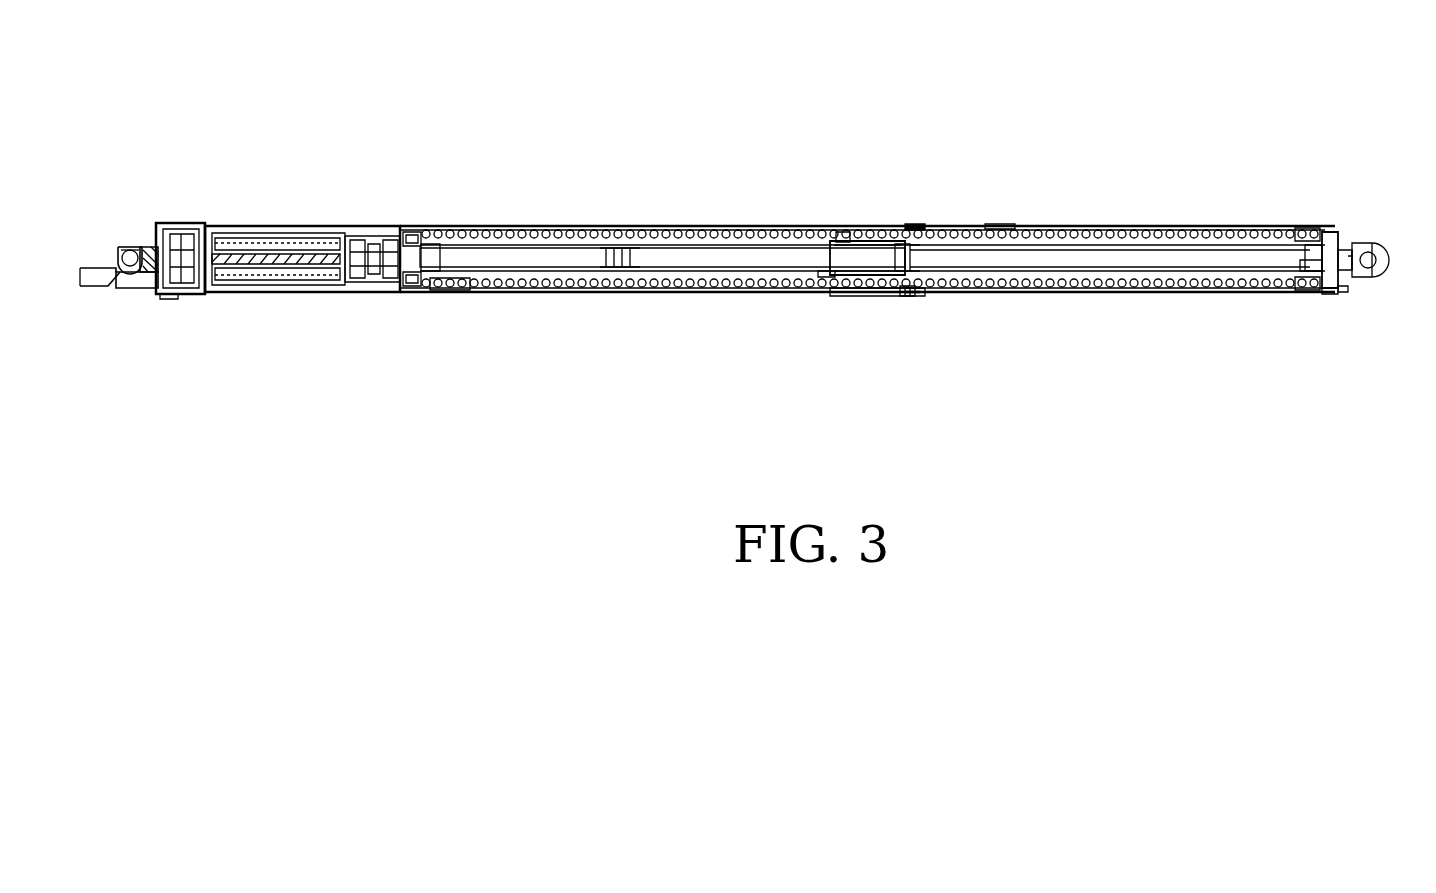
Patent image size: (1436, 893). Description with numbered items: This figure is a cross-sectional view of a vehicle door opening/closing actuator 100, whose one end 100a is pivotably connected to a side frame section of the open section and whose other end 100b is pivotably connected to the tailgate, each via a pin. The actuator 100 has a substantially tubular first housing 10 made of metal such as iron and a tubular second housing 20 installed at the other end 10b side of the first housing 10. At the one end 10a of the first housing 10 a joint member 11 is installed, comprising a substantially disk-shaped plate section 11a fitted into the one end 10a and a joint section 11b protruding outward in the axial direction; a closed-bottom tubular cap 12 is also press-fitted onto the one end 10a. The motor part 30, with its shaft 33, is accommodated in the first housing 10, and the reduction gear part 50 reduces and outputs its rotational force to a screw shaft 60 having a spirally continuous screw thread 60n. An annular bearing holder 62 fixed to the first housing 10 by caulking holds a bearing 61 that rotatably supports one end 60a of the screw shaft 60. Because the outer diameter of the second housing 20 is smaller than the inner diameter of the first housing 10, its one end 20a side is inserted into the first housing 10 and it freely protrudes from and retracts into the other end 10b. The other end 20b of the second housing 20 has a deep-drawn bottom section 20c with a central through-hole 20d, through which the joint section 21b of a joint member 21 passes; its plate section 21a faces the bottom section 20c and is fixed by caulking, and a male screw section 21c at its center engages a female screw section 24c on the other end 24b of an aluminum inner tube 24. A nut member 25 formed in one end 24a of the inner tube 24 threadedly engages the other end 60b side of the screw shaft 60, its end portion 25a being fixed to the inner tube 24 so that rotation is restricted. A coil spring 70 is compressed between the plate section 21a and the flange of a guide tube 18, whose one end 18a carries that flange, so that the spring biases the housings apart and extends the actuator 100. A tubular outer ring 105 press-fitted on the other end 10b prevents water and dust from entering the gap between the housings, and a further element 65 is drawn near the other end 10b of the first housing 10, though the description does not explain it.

The actuator 100 is at (887, 133).
The one end 100a is at (1388, 278).
The other end 100b is at (110, 287).
The first housing 10 is at (556, 220).
The one end 10a is at (170, 300).
The other end 10b is at (914, 298).
The joint member 11 is at (133, 244).
The plate section 11a is at (157, 290).
The joint section 11b is at (112, 246).
The cap 12 is at (178, 222).
The guide tube 18 is at (662, 230).
The one end 18a is at (445, 294).
The second housing 20 is at (1103, 220).
The one end 20a is at (840, 296).
The other end 20b is at (1325, 296).
The bottom section 20c is at (1340, 231).
The through-hole 20d is at (1345, 293).
The joint member 21 is at (1361, 226).
The plate section 21a is at (1328, 244).
The joint section 21b is at (1398, 235).
The male screw section 21c is at (1302, 283).
The inner tube 24 is at (1153, 230).
The one end 24a is at (842, 231).
The other end 24b is at (1310, 294).
The female screw section 24c is at (1290, 232).
The nut member 25 is at (868, 240).
The end portion 25a is at (826, 278).
The motor part 30 is at (290, 220).
The shaft 33 is at (313, 266).
The reduction gear part 50 is at (377, 220).
The screw shaft 60 is at (750, 247).
The one end 60a is at (452, 243).
The other end 60b is at (897, 243).
The screw thread 60n is at (621, 247).
The bearing 61 is at (410, 289).
The bearing holder 62 is at (411, 230).
The guide ring 65 is at (908, 297).
The coil spring 70 is at (1000, 229).
The outer ring 105 is at (922, 223).